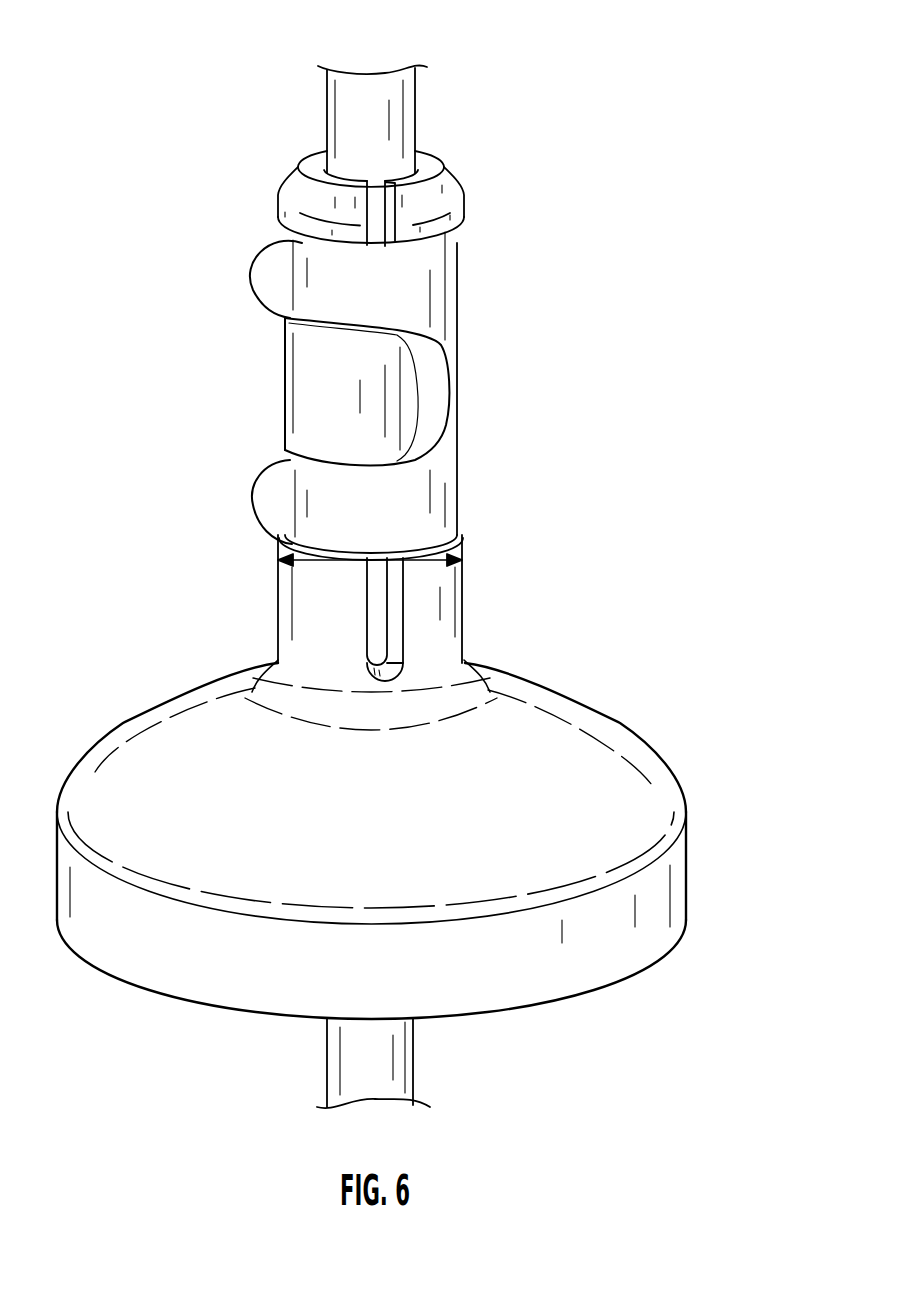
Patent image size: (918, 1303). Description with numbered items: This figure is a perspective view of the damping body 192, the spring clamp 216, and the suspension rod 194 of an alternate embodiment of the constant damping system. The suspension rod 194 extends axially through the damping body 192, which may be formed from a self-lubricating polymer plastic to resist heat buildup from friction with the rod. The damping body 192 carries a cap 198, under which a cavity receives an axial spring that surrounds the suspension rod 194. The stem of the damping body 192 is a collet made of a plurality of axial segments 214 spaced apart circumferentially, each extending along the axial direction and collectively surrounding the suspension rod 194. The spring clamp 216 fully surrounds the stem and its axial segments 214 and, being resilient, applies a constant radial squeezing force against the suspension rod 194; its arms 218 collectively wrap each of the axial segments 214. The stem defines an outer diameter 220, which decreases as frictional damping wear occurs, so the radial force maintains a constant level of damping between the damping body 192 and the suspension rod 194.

The damping body 192 is at (256, 598).
The suspension rod 194 is at (345, 1052).
The cap 198 is at (172, 732).
The axial segments 214 is at (350, 230).
The spring clamp 216 is at (457, 393).
The arms 218 is at (297, 282).
The outer diameter 220 is at (380, 558).